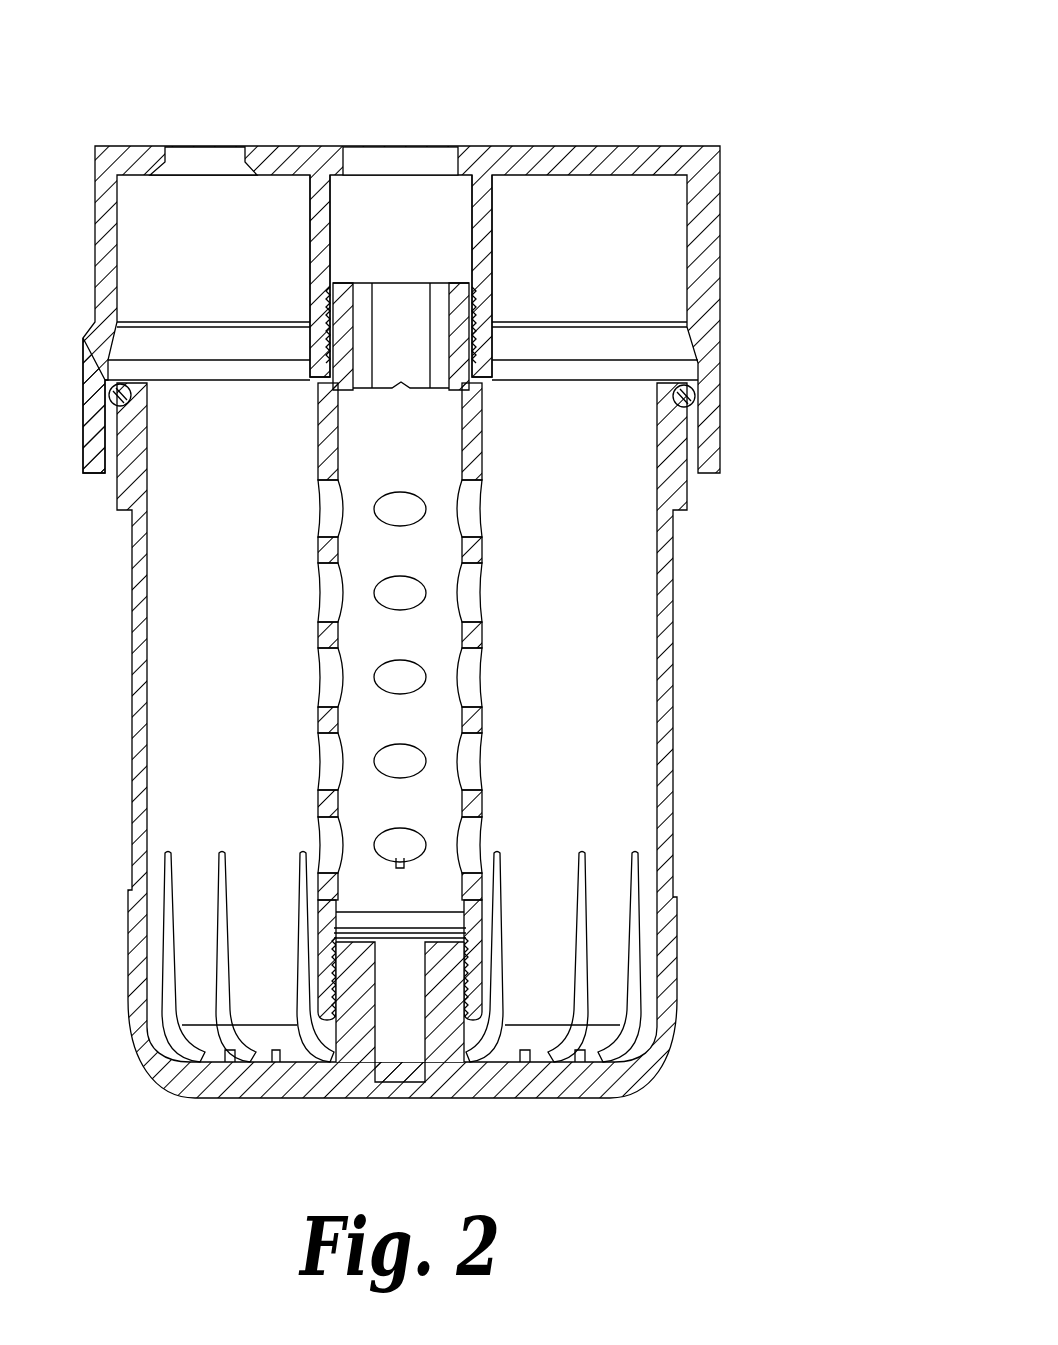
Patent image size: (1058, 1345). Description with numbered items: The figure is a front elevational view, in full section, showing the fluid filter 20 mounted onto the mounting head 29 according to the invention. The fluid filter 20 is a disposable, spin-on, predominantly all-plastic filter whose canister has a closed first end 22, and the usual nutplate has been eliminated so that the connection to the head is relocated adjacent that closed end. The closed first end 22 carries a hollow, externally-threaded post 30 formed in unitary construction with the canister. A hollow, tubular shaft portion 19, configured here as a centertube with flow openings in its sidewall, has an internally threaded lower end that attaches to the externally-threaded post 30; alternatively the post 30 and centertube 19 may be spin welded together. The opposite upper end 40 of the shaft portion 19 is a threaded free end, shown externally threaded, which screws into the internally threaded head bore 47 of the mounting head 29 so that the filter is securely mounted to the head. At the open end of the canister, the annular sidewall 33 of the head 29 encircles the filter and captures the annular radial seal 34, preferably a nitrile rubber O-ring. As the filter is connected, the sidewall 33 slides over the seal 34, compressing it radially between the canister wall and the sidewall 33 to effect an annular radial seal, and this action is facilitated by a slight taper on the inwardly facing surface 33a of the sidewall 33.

The mounting head 29 is at (484, 256).
The head bore 47 is at (310, 270).
The upper end of shaft portion 40 is at (456, 312).
The annular sidewall 33 is at (703, 366).
The inwardly facing surface 33a is at (108, 437).
The annular radial seal 34 is at (690, 398).
The shaft portion 19 is at (472, 443).
The fluid filter 20 is at (712, 781).
The externally-threaded post 30 is at (355, 1015).
The closed first end 22 is at (548, 1085).